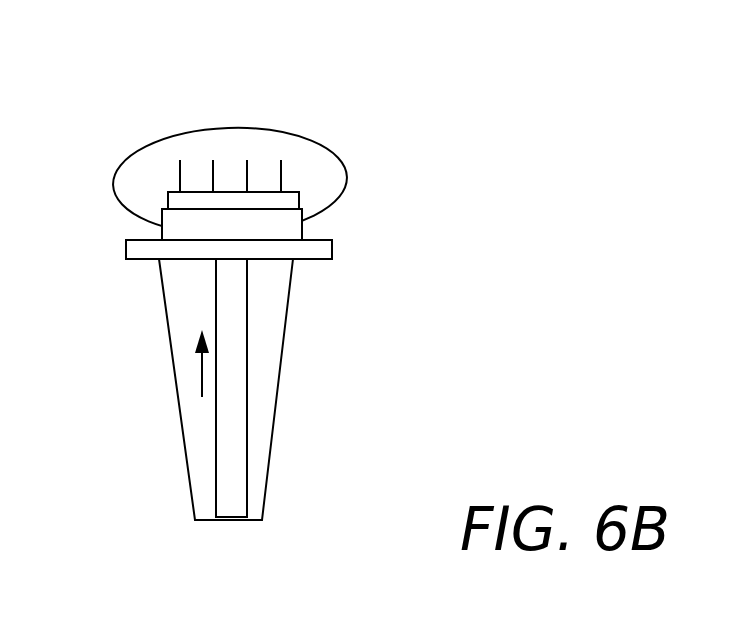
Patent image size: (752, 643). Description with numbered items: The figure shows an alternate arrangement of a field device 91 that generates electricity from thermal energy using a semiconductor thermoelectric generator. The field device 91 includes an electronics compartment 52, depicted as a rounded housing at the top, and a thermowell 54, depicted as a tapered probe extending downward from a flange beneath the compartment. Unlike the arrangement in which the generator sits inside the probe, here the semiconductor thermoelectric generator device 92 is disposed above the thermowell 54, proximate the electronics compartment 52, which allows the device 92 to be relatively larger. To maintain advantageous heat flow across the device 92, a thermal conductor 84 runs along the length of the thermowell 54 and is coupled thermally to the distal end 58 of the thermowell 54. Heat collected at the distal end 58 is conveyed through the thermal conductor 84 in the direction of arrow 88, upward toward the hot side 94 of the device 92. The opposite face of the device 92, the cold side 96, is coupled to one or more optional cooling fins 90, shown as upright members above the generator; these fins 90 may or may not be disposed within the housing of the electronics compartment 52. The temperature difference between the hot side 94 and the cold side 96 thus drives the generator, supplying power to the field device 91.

The electronics compartment 52 is at (288, 131).
The thermowell 54 is at (278, 401).
The distal end 58 is at (205, 520).
The thermal conductor 84 is at (247, 347).
The arrow 88 is at (203, 372).
The cooling fins 90 is at (213, 170).
The field device 91 is at (362, 126).
The semiconductor thermoelectric generator device 92 is at (302, 220).
The hot side 94 is at (273, 241).
The cold side 96 is at (169, 204).